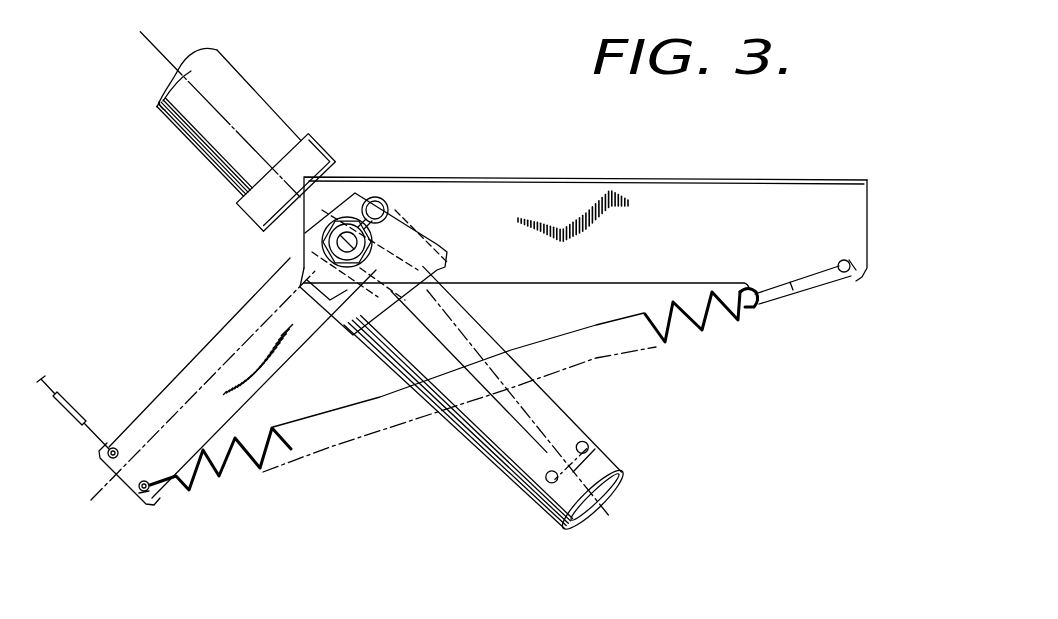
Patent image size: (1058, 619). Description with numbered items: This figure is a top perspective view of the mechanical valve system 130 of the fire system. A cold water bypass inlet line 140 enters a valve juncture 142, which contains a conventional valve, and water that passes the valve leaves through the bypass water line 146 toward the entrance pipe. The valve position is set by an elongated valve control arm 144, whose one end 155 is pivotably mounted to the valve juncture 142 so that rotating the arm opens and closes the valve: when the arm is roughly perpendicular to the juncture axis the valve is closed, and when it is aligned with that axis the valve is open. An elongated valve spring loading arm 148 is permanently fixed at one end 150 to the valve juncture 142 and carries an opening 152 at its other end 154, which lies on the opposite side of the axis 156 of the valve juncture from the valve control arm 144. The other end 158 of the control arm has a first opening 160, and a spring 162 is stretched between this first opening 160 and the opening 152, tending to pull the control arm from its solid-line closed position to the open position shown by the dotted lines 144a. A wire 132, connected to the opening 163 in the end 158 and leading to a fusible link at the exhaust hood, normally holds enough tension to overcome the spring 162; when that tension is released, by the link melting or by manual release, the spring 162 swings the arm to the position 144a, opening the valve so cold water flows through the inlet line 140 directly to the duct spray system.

The mechanical valve system 130 is at (492, 164).
The wire 132 is at (60, 370).
The cold water bypass inlet line 140 is at (532, 503).
The valve juncture 142 is at (352, 334).
The elongated valve control arm 144 is at (232, 322).
The dotted line position of valve control arm 144a is at (466, 433).
The bypass water line 146 is at (180, 132).
The elongated valve spring loading arm 148 is at (662, 188).
The one end of valve spring loading arm 150 is at (268, 235).
The opening in valve spring loading arm 152 is at (851, 278).
The other end of valve spring loading arm 154 is at (868, 202).
The one end of valve control arm 155 is at (386, 228).
The axis of valve juncture 156 is at (544, 442).
The other end of valve control arm 158 is at (100, 464).
The first opening 160 is at (142, 492).
The spring 162 is at (282, 463).
The opening 163 is at (116, 446).